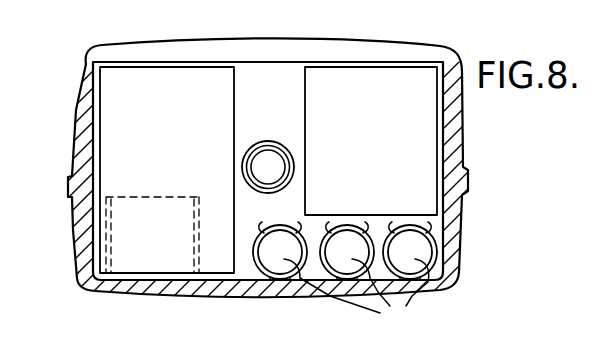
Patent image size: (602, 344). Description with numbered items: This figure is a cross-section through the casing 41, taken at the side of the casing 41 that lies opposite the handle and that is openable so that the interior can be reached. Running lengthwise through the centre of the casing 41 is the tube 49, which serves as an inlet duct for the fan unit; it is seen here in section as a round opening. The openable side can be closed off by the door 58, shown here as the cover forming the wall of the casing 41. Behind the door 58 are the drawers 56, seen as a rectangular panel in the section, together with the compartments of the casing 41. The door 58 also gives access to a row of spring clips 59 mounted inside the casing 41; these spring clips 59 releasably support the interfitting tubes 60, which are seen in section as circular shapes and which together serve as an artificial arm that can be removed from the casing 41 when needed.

The casing 41 is at (462, 153).
The tube 49 is at (268, 140).
The drawers 56 is at (174, 116).
The door 58 is at (368, 48).
The spring clips 59 is at (387, 222).
The interfitting tubes 60 is at (356, 296).